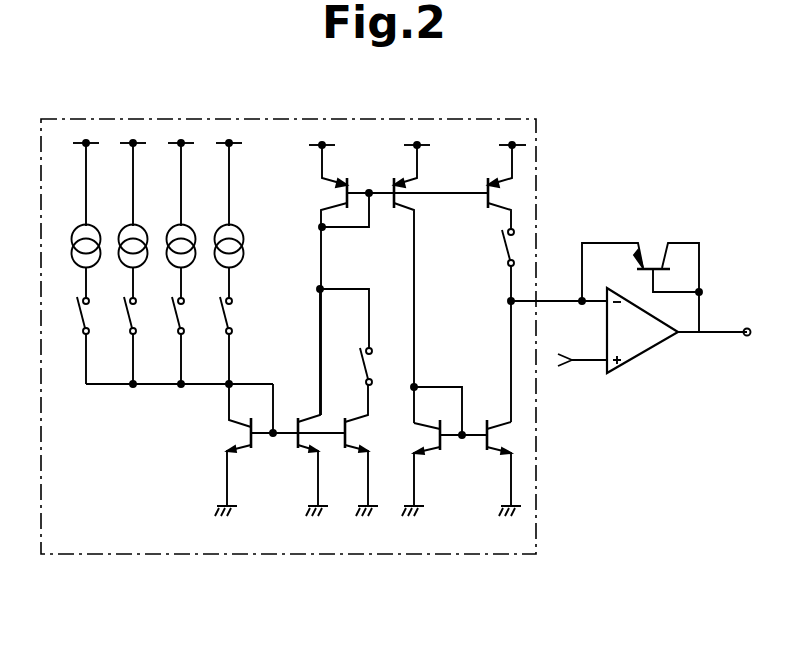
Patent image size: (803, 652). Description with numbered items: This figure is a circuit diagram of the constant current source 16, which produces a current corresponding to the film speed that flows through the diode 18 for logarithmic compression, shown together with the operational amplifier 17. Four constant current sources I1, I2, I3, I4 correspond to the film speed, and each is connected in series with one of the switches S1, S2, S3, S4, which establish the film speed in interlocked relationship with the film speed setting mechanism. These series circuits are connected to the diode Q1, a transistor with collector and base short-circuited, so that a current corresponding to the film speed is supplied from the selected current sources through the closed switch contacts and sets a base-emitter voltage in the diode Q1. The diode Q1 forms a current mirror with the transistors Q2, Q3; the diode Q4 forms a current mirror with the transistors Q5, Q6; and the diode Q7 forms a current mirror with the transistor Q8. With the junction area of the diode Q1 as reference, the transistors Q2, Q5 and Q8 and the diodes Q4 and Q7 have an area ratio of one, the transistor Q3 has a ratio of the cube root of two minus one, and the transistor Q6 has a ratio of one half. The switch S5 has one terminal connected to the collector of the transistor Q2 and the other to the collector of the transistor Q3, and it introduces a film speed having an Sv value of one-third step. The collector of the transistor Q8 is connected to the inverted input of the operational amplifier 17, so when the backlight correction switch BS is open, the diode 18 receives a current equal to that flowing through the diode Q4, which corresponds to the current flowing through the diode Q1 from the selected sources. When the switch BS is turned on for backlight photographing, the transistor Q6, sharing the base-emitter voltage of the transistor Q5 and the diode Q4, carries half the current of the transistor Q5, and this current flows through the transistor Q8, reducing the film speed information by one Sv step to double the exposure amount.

The constant current source 16 is at (465, 556).
The operational amplifier 17 is at (650, 347).
The diode 18 is at (658, 265).
The constant current source I1 is at (83, 230).
The constant current source I2 is at (128, 233).
The constant current source I3 is at (177, 230).
The constant current source I4 is at (223, 233).
The switch S1 is at (80, 313).
The switch S2 is at (127, 314).
The switch S3 is at (175, 313).
The switch S4 is at (222, 314).
The switch S5 is at (365, 369).
The switch for backlight correction BS is at (503, 247).
The diode Q1 is at (238, 446).
The transistor Q2 is at (306, 450).
The transistor Q3 is at (352, 449).
The diode Q4 is at (332, 178).
The transistor Q5 is at (401, 178).
The transistor Q6 is at (497, 178).
The diode Q7 is at (430, 448).
The transistor Q8 is at (495, 449).